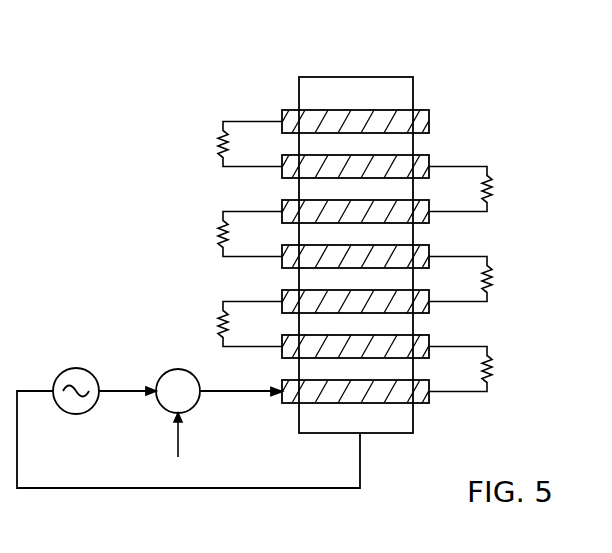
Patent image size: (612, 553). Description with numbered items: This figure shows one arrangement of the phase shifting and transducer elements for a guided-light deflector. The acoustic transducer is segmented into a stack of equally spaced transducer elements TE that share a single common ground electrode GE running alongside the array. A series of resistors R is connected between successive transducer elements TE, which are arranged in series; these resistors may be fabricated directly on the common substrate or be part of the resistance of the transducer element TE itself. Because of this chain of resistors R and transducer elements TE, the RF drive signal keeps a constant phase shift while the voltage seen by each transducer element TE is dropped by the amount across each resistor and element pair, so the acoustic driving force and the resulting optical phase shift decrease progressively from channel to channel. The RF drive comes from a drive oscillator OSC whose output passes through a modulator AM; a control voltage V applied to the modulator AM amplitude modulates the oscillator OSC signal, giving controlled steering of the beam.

The transducer element TE is at (358, 115).
The common ground electrode GE is at (403, 92).
The resistor R is at (217, 146).
The drive oscillator OSC is at (96, 380).
The modulator AM is at (182, 369).
The control voltage V is at (178, 448).